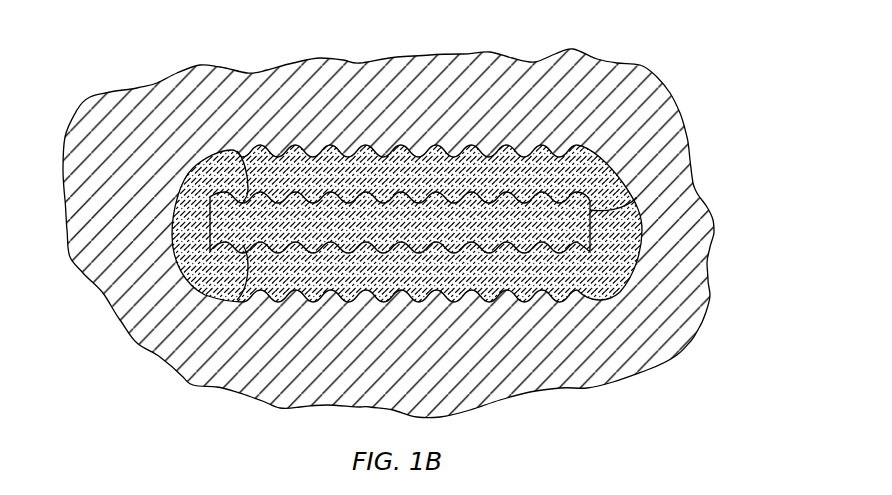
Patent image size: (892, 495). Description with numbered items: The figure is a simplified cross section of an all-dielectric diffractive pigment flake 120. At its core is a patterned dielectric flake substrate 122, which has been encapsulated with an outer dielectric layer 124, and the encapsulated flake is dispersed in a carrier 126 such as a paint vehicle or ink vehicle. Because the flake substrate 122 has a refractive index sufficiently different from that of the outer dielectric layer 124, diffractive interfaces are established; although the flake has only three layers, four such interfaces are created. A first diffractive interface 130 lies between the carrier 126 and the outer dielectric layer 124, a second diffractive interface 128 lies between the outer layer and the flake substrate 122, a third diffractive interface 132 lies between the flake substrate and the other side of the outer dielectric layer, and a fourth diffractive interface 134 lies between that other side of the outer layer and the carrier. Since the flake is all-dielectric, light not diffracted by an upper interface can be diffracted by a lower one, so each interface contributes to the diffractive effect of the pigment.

The all-dielectric diffractive pigment flake 120 is at (575, 133).
The patterned dielectric flake substrate 122 is at (637, 197).
The outer dielectric layer 124 is at (607, 158).
The carrier 126 is at (713, 230).
The second diffractive interface 128 is at (242, 167).
The first diffractive interface 130 is at (261, 147).
The third diffractive interface 132 is at (228, 294).
The fourth diffractive interface 134 is at (242, 298).